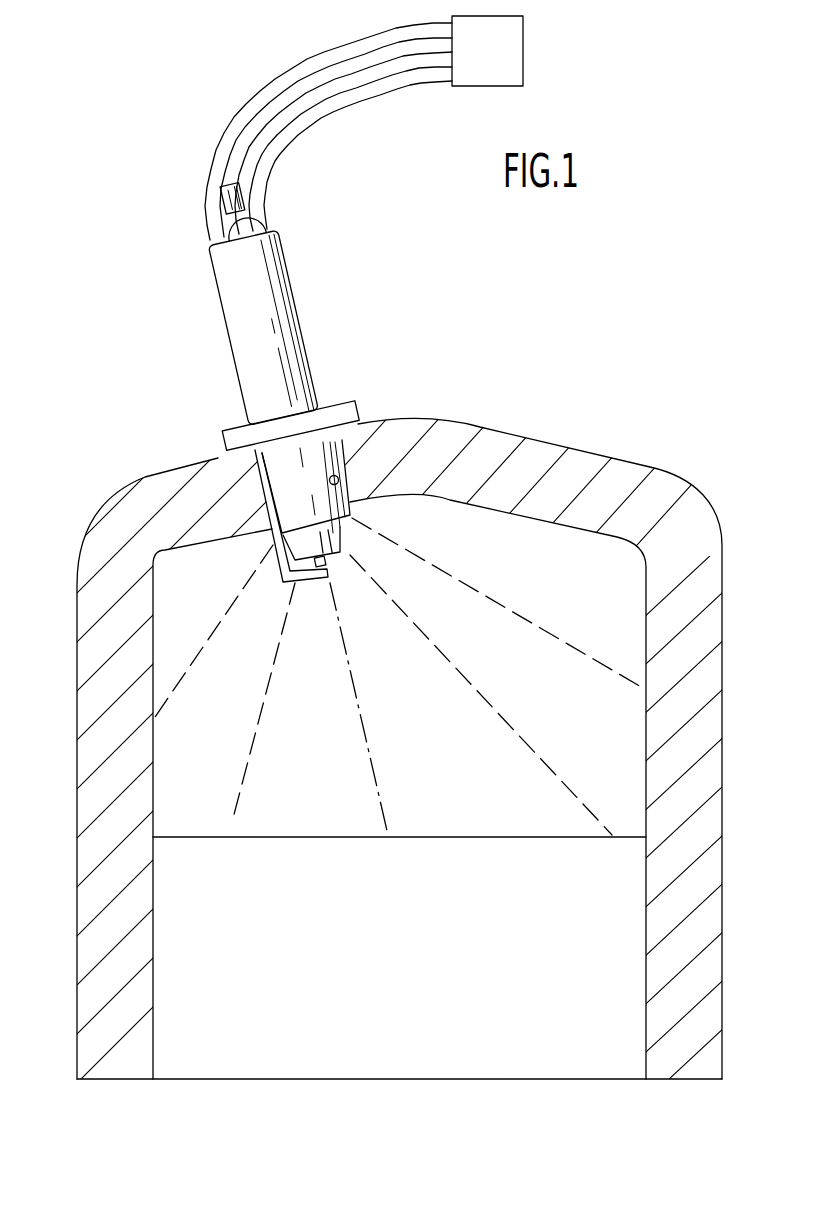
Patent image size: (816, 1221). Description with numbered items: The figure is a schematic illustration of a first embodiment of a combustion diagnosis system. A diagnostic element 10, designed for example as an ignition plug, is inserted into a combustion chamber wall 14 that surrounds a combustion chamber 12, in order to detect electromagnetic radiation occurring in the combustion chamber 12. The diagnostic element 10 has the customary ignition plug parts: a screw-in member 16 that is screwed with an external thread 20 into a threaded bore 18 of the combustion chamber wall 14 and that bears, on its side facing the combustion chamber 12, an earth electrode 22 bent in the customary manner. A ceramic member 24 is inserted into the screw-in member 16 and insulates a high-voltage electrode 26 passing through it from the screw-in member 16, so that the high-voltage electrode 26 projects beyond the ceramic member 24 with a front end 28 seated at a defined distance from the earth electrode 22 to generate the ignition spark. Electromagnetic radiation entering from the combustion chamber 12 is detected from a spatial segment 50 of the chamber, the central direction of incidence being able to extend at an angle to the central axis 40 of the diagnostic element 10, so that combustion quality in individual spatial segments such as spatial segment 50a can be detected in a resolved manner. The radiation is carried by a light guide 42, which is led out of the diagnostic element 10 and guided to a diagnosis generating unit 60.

The diagnostic element 10 is at (294, 370).
The combustion chamber 12 is at (466, 709).
The combustion chamber wall 14 is at (572, 467).
The screw-in member 16 is at (237, 440).
The threaded bore 18 is at (340, 484).
The external thread 20 is at (350, 466).
The earth electrode 22 is at (291, 543).
The ceramic member 24 is at (238, 287).
The high-voltage electrode 26 is at (223, 199).
The front end 28 is at (350, 555).
The central axis 40 is at (372, 709).
The light guide 42 is at (248, 92).
The spatial segment 50 is at (200, 700).
The spatial segment 50a is at (573, 684).
The diagnosis generating unit 60 is at (513, 78).